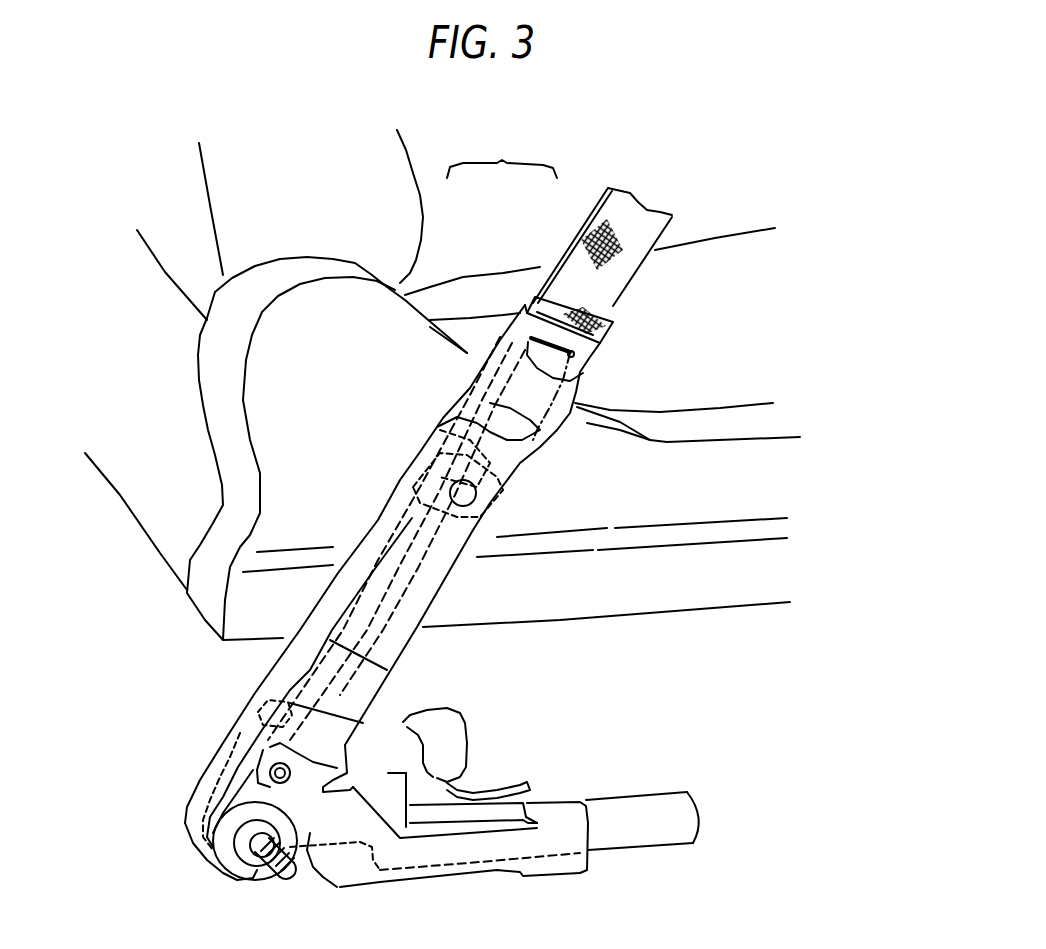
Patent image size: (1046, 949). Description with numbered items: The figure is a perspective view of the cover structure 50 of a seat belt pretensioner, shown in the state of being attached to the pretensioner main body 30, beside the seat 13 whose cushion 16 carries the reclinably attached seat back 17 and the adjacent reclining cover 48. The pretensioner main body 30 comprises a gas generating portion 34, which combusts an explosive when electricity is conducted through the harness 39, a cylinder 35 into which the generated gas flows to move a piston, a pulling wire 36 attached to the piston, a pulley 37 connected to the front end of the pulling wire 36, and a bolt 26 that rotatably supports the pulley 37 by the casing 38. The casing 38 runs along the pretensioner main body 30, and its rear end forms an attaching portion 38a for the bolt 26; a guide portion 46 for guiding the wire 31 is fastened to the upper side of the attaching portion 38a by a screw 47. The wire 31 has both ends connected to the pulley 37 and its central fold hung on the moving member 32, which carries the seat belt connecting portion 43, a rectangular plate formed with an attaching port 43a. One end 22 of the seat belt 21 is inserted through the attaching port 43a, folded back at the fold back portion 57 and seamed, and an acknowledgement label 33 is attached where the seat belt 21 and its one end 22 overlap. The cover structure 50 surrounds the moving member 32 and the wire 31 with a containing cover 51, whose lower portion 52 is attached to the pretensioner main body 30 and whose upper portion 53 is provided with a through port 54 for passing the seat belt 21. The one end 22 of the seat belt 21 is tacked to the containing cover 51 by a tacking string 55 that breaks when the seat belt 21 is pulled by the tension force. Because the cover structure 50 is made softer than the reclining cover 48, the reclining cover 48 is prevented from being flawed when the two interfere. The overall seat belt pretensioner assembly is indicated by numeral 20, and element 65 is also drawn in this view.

The seat 13 is at (502, 155).
The cushion 16 is at (478, 233).
The seat back 17 is at (440, 206).
The seat belt device 20 is at (816, 706).
The seat belt 21 is at (653, 229).
The one end of the seat belt 22 is at (611, 427).
The bolt 26 is at (219, 881).
The pretensioner main body 30 is at (624, 736).
The wire 31 is at (403, 576).
The moving member 32 is at (521, 485).
The acknowledgement label 33 is at (632, 298).
The gas generating portion 34 is at (433, 712).
The cylinder 35 is at (650, 775).
The pulling wire 36 is at (352, 889).
The pulley 37 is at (198, 841).
The casing 38 is at (464, 854).
The attaching portion 38a is at (315, 884).
The harness 39 is at (493, 744).
The seat belt connecting portion 43 is at (543, 441).
The attaching port 43a is at (439, 431).
The guide portion 46 is at (228, 682).
The screw 47 is at (233, 730).
The reclining cover 48 is at (256, 391).
The cover structure 50 is at (355, 564).
The containing cover 51 is at (325, 479).
The lower portion 52 is at (178, 797).
The upper portion 53 is at (436, 333).
The through port 54 is at (643, 313).
The tacking string 55 is at (624, 348).
The fold back portion 57 is at (445, 369).
The spring 65 is at (612, 373).